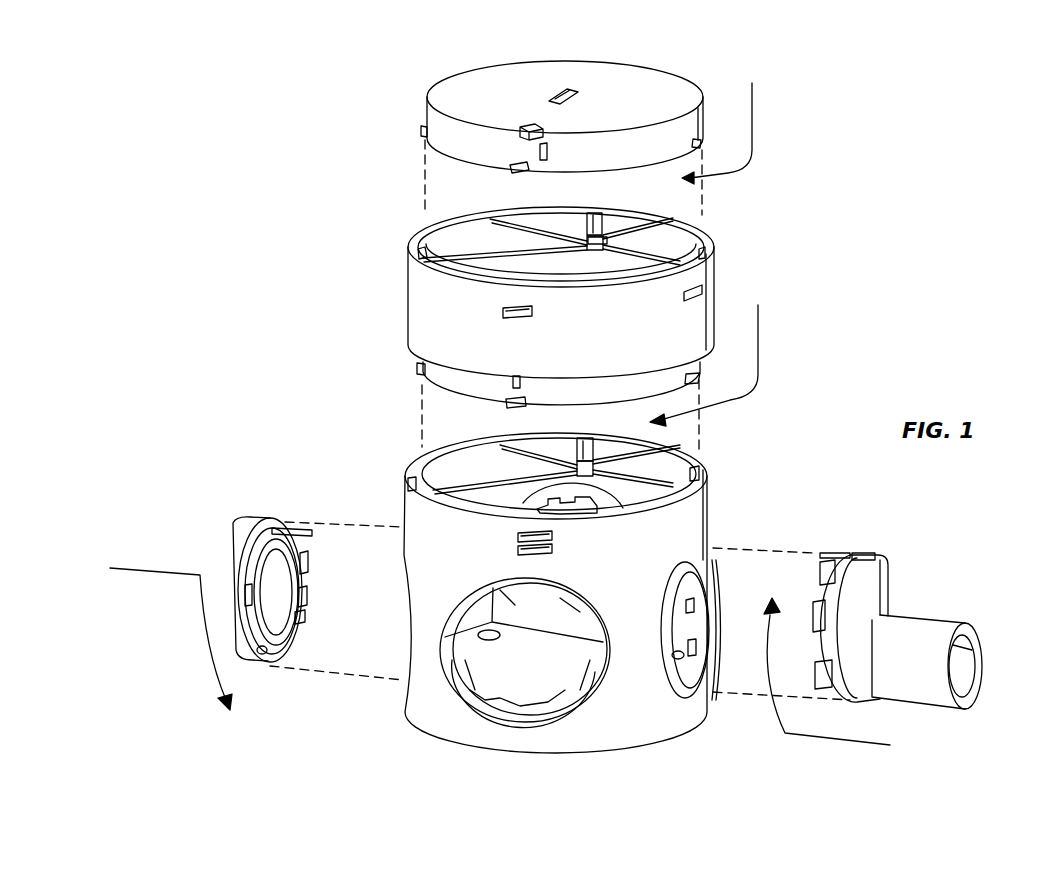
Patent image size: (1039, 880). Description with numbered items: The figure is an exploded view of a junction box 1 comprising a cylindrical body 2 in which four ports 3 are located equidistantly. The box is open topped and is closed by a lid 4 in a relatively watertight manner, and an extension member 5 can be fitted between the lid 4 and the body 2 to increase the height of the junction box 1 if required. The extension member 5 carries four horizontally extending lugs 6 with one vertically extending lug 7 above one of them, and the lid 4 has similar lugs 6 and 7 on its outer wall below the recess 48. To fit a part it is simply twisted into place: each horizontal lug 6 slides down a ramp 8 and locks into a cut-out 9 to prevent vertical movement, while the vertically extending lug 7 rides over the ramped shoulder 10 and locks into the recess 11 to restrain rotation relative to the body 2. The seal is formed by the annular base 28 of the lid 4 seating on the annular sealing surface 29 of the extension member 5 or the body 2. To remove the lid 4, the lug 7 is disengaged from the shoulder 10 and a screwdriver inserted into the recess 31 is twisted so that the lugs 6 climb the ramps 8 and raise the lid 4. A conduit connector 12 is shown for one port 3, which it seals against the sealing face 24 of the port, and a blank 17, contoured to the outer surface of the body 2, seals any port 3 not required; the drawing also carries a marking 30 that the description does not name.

The junction box 1 is at (775, 508).
The cylindrical body 2 is at (405, 708).
The ports 3 is at (563, 696).
The lid 4 is at (704, 73).
The extension member 5 is at (726, 294).
The horizontally extending lugs 6 is at (512, 169).
The vertically extending lug 7 is at (548, 152).
The ramp 8 is at (538, 232).
The cut-out 9 is at (597, 248).
The ramped shoulder 10 is at (595, 217).
The recess 11 is at (606, 238).
The conduit connector 12 is at (892, 580).
The blank 17 is at (278, 525).
The sealing face 24 is at (503, 708).
The annular base 28 is at (697, 152).
The annular sealing surface 29 is at (673, 254).
The ring rotation direction 30 is at (730, 387).
The recess 31 is at (566, 88).
The recess 48 is at (528, 127).